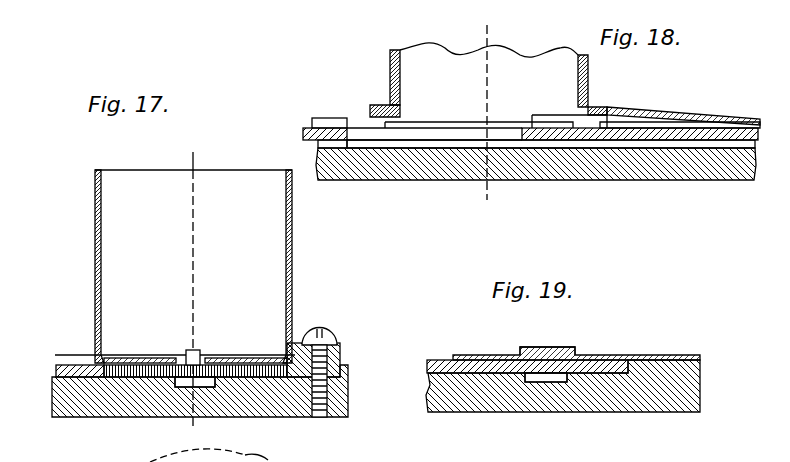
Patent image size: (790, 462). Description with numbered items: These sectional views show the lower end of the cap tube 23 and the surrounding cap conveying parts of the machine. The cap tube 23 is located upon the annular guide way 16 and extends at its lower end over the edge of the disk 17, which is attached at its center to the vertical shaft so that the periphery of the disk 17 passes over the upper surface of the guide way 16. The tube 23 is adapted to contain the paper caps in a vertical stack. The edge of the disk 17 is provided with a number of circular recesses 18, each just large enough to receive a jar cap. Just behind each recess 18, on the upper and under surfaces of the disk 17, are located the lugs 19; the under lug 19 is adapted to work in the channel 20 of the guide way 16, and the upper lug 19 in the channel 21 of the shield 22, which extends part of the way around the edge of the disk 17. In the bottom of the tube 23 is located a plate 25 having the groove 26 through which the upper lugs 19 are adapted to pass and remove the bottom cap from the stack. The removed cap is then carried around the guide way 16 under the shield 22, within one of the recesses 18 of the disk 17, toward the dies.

In FIG. 17, the annular guide way 16 is at (348, 400).
In FIG. 18, the annular guide way 16 is at (712, 176).
In FIG. 19, the annular guide way 16 is at (700, 375).
In FIG. 17, the disk 17 is at (56, 368).
In FIG. 18, the disk 17 is at (588, 190).
In FIG. 19, the disk 17 is at (598, 360).
In FIG. 17, the circular recesses 18 is at (190, 352).
In FIG. 18, the circular recesses 18 is at (415, 133).
In FIG. 18, the lugs 19 is at (332, 120).
In FIG. 17, the channel 20 is at (220, 387).
In FIG. 18, the channel 20 is at (655, 148).
In FIG. 19, the channel 20 is at (540, 382).
In FIG. 18, the channel 21 is at (728, 126).
In FIG. 19, the channel 21 is at (548, 347).
In FIG. 18, the shield 22 is at (655, 116).
In FIG. 19, the shield 22 is at (658, 345).
In FIG. 17, the cap tube 23 is at (193, 254).
In FIG. 18, the cap tube 23 is at (488, 70).
In FIG. 17, the plate 25 is at (145, 358).
In FIG. 18, the plate 25 is at (458, 124).
In FIG. 17, the groove 26 is at (195, 360).